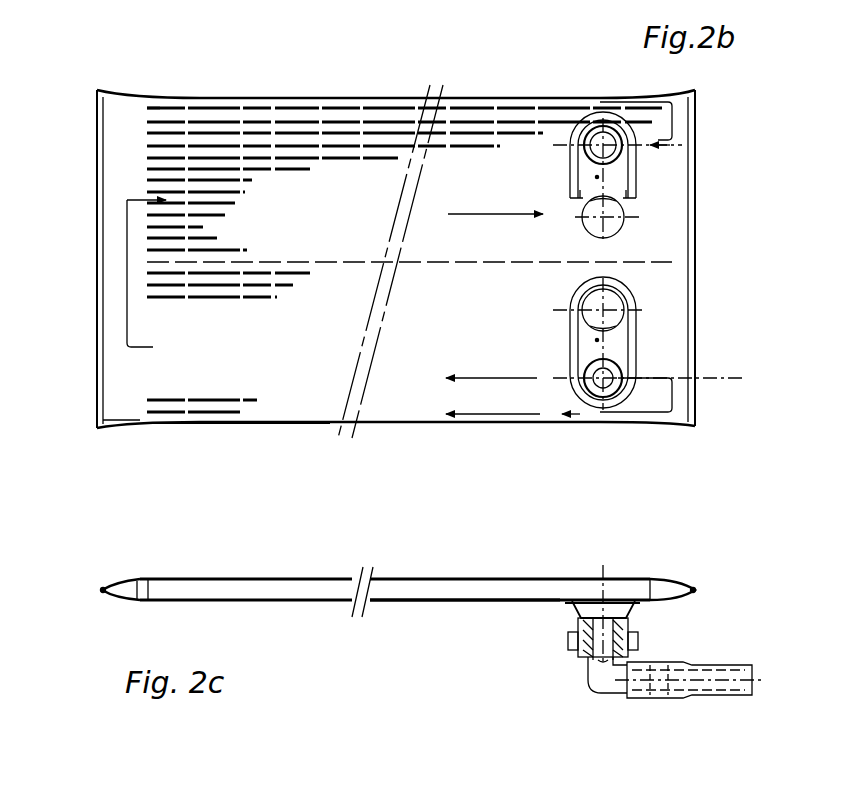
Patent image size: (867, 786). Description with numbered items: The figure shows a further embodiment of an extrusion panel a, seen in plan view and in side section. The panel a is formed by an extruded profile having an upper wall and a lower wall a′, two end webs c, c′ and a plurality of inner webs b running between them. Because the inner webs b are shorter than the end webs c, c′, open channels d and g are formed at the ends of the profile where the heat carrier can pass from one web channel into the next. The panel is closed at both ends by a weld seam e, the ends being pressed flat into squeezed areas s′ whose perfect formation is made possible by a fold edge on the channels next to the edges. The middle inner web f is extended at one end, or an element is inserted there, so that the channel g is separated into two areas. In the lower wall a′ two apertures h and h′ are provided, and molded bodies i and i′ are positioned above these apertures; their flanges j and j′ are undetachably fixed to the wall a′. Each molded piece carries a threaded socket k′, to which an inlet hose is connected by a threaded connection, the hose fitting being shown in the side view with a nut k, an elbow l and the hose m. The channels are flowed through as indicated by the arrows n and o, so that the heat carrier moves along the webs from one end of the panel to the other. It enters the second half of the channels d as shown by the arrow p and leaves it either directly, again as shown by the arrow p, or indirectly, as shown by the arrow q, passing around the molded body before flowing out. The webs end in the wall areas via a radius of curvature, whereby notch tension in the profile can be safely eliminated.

In FIG. 2B, the extrusion panel a is at (423, 407).
In FIG. 2C, the extrusion panel a is at (440, 590).
In FIG. 2C, the lower wall a′ is at (408, 603).
In FIG. 2B, the inner webs b is at (152, 126).
In FIG. 2C, the inner webs b is at (150, 590).
In FIG. 2B, the end web c is at (243, 97).
In FIG. 2B, the end web c′ is at (248, 428).
In FIG. 2C, the channel d is at (137, 580).
In FIG. 2B, the weld seam e is at (101, 351).
In FIG. 2C, the weld seam e is at (103, 587).
In FIG. 2B, the middle inner web f is at (665, 262).
In FIG. 2C, the channel g is at (665, 590).
In FIG. 2B, the aperture h is at (612, 222).
In FIG. 2B, the aperture h′ is at (610, 316).
In FIG. 2B, the molded body i is at (597, 177).
In FIG. 2B, the molded body i′ is at (597, 340).
In FIG. 2B, the flange j is at (637, 131).
In FIG. 2C, the flange j is at (577, 604).
In FIG. 2B, the flange j′ is at (625, 296).
In FIG. 2C, the nut k is at (623, 625).
In FIG. 2B, the threaded socket k′ is at (610, 152).
In FIG. 2C, the elbow l is at (592, 678).
In FIG. 2C, the hose m is at (715, 692).
In FIG. 2B, the arrow n is at (530, 378).
In FIG. 2B, the arrow o is at (513, 414).
In FIG. 2B, the arrow p is at (126, 270).
In FIG. 2B, the arrow q is at (627, 100).
In FIG. 2B, the squeezed area s′ is at (113, 430).